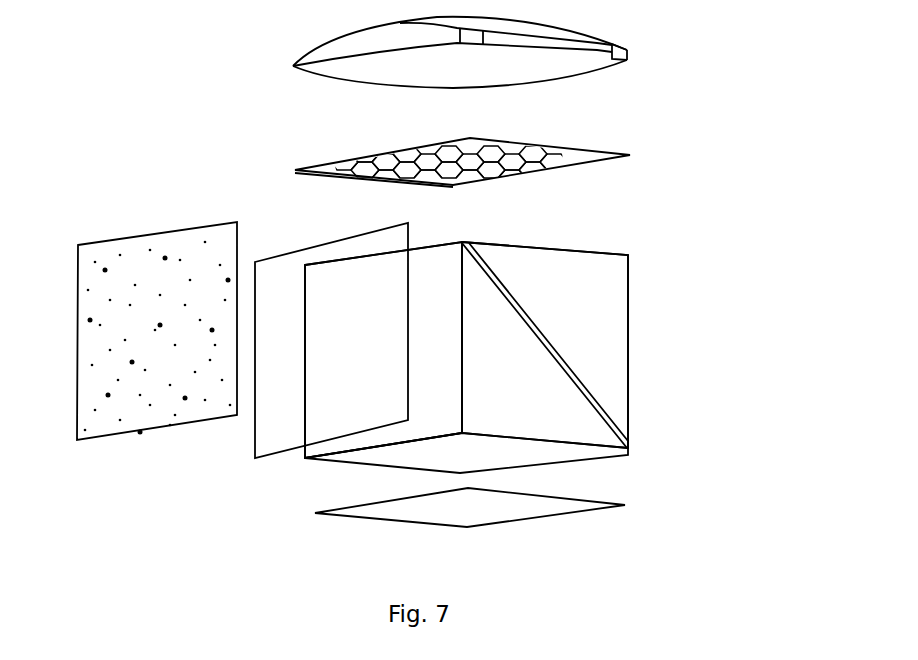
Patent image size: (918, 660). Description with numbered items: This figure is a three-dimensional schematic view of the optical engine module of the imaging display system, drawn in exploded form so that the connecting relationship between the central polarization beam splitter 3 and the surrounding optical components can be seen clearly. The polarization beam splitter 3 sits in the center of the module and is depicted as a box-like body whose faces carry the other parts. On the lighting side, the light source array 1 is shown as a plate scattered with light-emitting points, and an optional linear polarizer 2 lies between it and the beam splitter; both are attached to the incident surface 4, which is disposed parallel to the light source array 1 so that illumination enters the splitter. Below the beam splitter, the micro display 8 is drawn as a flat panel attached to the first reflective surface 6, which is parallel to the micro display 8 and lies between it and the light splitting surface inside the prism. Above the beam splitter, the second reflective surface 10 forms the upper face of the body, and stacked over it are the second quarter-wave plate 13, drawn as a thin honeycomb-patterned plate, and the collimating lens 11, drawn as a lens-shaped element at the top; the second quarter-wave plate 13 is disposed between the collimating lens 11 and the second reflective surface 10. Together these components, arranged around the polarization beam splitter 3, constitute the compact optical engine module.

The light source array 1 is at (177, 263).
The linear polarizer 2 is at (302, 247).
The polarization beam splitter 3 is at (602, 337).
The incident surface 4 is at (433, 413).
The first reflective surface 6 is at (550, 452).
The micro display 8 is at (553, 528).
The second reflective surface 10 is at (557, 248).
The collimating lens 11 is at (605, 48).
The second quarter-wave plate 13 is at (575, 160).